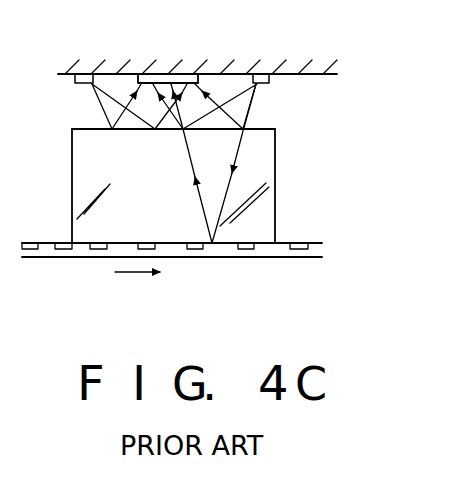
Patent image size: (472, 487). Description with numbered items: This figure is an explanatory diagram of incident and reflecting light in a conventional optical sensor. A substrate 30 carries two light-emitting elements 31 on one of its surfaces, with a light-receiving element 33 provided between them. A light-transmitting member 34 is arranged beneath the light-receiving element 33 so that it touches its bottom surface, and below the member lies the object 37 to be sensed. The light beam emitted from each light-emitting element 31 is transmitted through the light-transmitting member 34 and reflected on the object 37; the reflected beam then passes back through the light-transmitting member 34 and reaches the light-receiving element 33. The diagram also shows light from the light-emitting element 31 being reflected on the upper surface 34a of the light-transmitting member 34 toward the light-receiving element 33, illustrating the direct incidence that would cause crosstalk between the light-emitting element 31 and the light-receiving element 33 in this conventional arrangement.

The substrate 30 is at (337, 74).
The light-emitting element 31 is at (88, 73).
The light-receiving element 33 is at (166, 73).
The light-transmitting member 34 is at (275, 203).
The upper surface of the light-transmitting member 34a is at (275, 129).
The object 37 is at (291, 258).